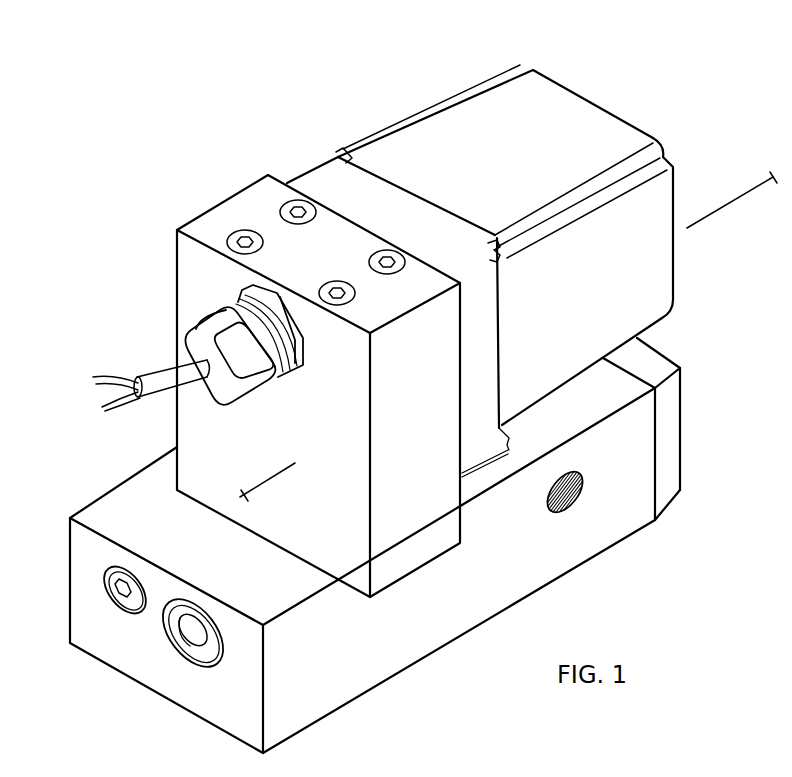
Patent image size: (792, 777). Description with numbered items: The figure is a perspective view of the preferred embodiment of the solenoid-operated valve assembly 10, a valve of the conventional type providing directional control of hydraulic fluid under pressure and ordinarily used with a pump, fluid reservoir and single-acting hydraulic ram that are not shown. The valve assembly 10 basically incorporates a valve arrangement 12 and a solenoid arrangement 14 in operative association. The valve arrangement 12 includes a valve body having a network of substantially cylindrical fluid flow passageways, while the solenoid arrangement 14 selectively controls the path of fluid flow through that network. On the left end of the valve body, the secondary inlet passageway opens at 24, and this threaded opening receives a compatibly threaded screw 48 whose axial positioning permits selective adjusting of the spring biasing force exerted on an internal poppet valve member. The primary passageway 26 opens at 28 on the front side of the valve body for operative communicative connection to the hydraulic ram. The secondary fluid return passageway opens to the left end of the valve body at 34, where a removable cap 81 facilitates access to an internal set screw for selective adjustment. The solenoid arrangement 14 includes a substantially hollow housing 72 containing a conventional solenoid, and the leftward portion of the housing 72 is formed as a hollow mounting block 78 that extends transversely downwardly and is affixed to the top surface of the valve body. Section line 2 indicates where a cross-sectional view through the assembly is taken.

The section line 2- 2 is at (748, 165).
The valve assembly 10 is at (125, 467).
The valve arrangement 12 is at (430, 632).
The solenoid arrangement 14 is at (578, 314).
The opening of secondary inlet passageway 24 is at (137, 570).
The primary passageway 26 is at (577, 498).
The opening of primary passageway 28 is at (578, 492).
The opening of secondary fluid return passageway 34 is at (223, 645).
The screw 48 is at (128, 610).
The housing 72 is at (427, 133).
The mounting block 78 is at (427, 493).
The removable cap 81 is at (203, 663).